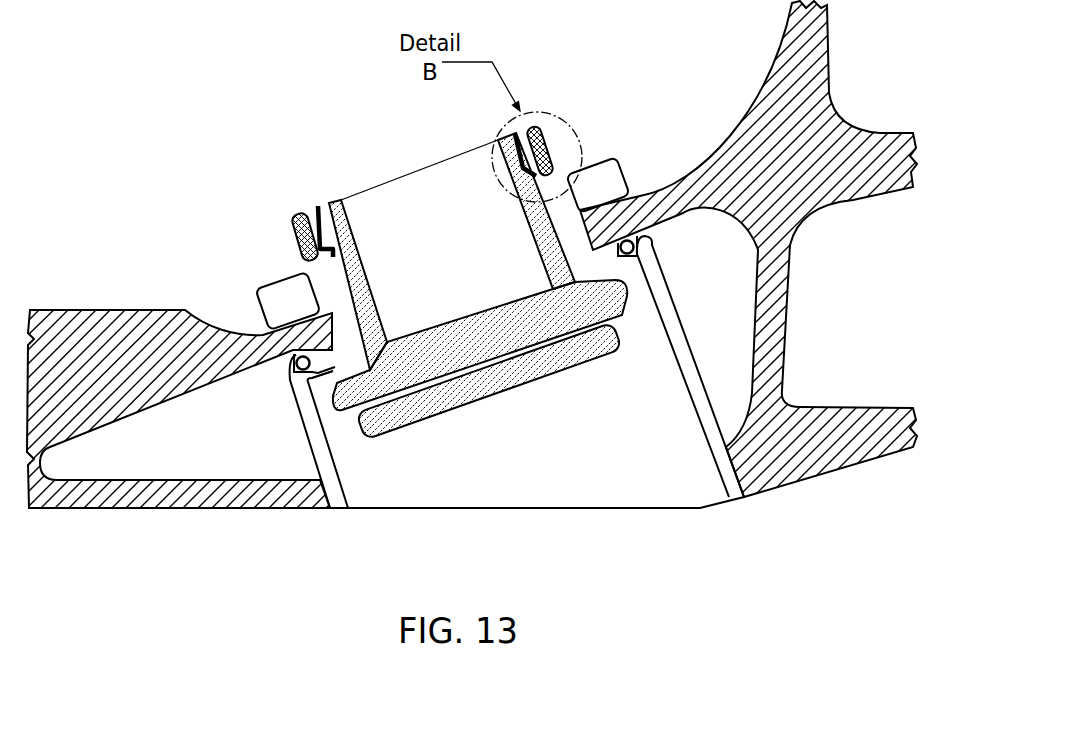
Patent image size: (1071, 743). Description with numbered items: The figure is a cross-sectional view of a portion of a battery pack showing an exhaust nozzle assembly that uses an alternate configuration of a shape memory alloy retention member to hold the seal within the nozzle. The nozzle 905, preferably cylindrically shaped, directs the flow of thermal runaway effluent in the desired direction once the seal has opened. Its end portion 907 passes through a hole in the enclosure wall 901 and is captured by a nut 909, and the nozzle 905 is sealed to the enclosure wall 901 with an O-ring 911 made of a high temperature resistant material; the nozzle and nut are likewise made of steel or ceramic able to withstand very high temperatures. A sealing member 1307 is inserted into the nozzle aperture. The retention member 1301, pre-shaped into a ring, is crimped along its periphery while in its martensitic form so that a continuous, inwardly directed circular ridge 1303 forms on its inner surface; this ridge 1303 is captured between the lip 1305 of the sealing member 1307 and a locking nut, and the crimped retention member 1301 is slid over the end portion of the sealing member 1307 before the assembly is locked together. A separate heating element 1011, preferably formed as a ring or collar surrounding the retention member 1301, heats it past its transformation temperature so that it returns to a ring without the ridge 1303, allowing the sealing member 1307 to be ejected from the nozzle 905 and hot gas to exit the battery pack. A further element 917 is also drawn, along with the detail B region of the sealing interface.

The enclosure wall 901 is at (805, 182).
The nozzle 905 is at (683, 385).
The end portion 907 is at (563, 260).
The nut 909 is at (612, 193).
The O-ring 911 is at (289, 352).
The housing flange 917 is at (313, 382).
The heating element 1011 is at (293, 216).
The retention member 1301 is at (543, 122).
The ridge 1303 is at (349, 204).
The lip 1305 is at (348, 261).
The sealing member 1307 is at (460, 357).